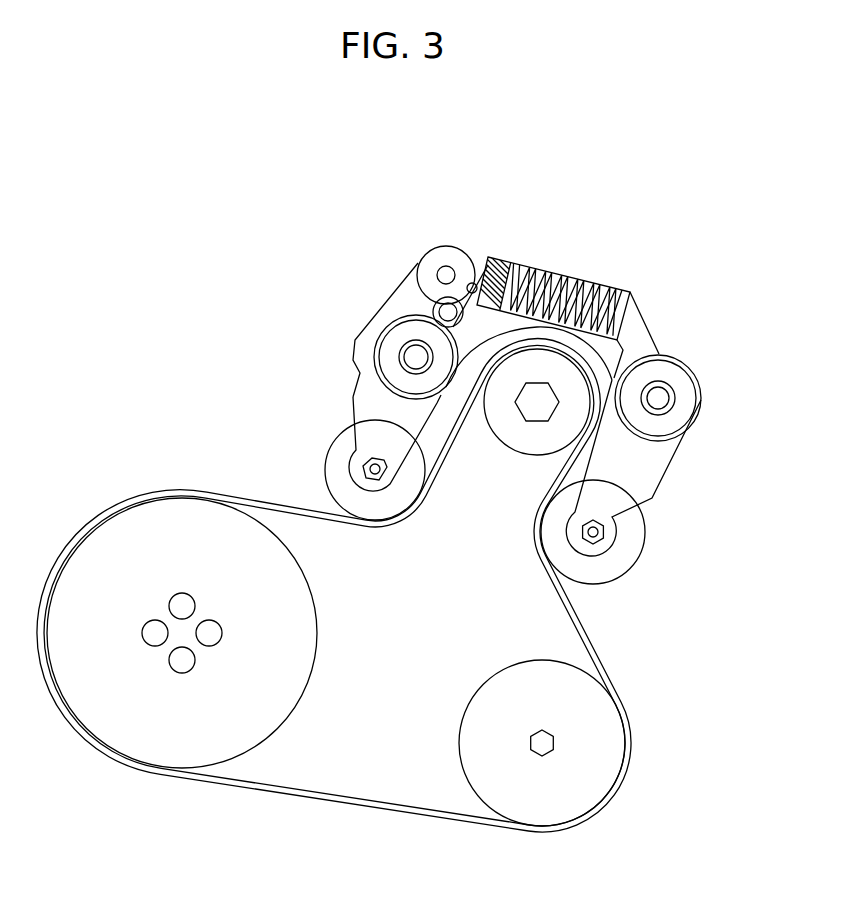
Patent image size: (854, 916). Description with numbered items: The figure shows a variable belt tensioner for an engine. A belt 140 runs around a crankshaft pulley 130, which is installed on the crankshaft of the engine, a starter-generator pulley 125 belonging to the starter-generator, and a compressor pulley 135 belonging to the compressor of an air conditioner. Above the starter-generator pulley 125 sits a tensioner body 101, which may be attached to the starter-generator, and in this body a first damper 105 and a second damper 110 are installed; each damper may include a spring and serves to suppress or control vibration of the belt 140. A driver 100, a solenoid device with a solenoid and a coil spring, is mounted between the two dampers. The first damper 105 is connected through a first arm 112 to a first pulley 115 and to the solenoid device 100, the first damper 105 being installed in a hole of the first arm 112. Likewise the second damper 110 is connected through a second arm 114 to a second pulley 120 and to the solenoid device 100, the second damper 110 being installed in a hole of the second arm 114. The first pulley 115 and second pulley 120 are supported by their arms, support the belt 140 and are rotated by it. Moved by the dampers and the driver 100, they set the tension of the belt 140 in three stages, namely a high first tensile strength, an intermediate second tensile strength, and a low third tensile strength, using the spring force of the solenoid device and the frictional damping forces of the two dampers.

The driver 100 is at (595, 284).
The tensioner body 101 is at (392, 296).
The first damper 105 is at (398, 340).
The second damper 110 is at (670, 377).
The first arm 112 is at (352, 378).
The second arm 114 is at (670, 468).
The first pulley 115 is at (324, 470).
The second pulley 120 is at (646, 532).
The starter-generator pulley 125 is at (500, 450).
The crankshaft pulley 130 is at (318, 633).
The compressor pulley 135 is at (460, 745).
The belt 140 is at (592, 626).